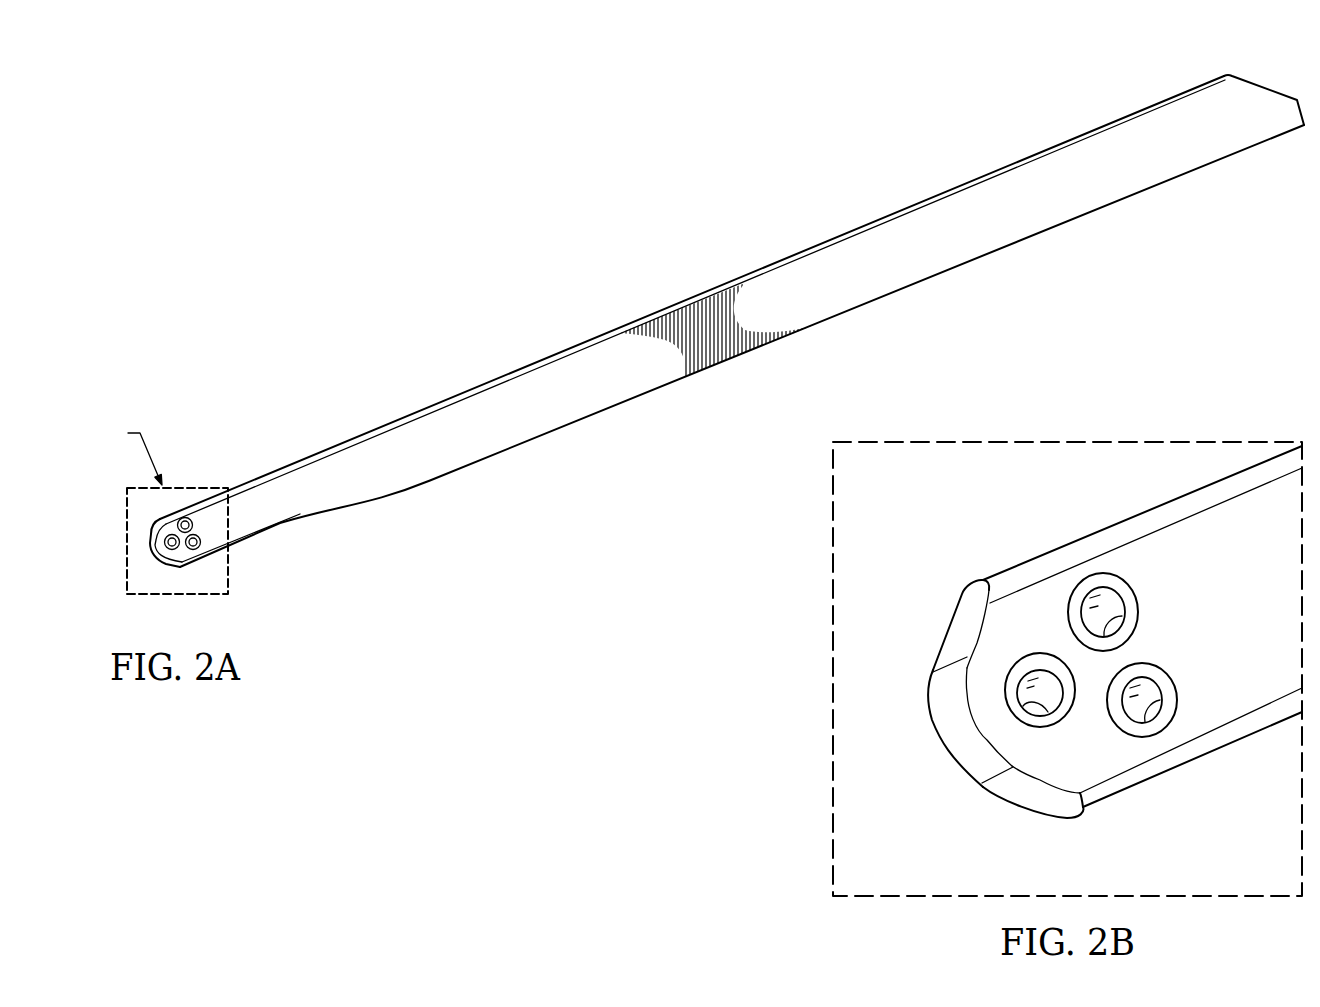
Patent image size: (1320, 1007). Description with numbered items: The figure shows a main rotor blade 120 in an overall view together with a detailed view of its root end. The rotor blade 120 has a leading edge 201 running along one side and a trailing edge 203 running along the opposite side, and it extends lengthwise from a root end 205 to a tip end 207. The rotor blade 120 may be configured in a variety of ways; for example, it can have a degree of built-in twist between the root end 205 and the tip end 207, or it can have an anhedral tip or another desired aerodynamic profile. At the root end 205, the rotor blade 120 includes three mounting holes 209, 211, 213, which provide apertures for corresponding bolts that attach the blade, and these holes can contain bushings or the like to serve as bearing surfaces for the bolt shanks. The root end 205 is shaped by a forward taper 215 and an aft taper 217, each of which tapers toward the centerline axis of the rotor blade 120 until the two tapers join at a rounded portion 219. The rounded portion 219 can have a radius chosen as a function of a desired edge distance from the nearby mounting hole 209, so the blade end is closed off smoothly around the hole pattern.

In FIG. 2A, the rotor blade 120 is at (383, 239).
In FIG. 2A, the leading edge 201 is at (783, 258).
In FIG. 2A, the trailing edge 203 is at (1012, 247).
In FIG. 2A, the root end 205 is at (127, 546).
In FIG. 2B, the root end 205 is at (964, 819).
In FIG. 2A, the tip end 207 is at (1268, 90).
In FIG. 2B, the mounting hole 209 is at (1045, 712).
In FIG. 2B, the mounting hole 211 is at (1122, 616).
In FIG. 2B, the mounting hole 213 is at (1158, 694).
In FIG. 2B, the forward taper 215 is at (967, 606).
In FIG. 2B, the aft taper 217 is at (1050, 805).
In FIG. 2B, the rounded portion 219 is at (947, 724).